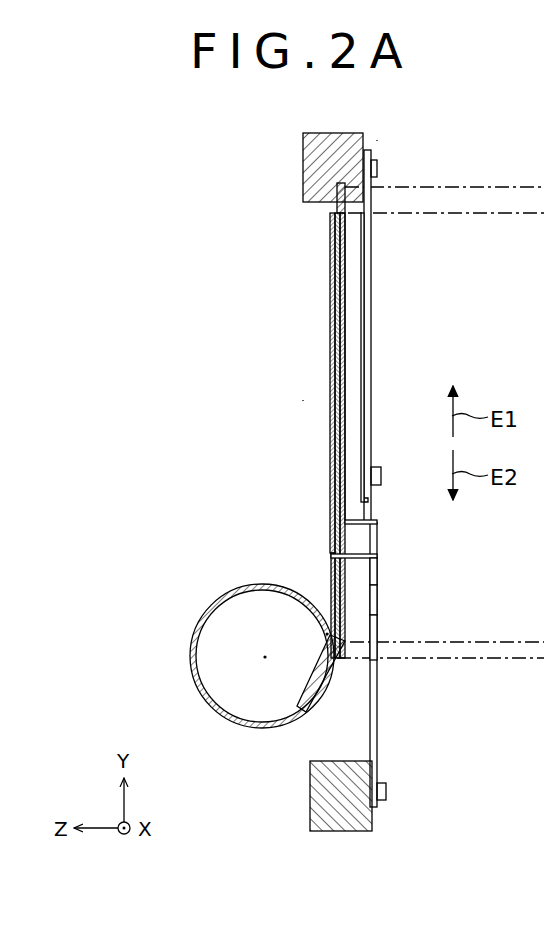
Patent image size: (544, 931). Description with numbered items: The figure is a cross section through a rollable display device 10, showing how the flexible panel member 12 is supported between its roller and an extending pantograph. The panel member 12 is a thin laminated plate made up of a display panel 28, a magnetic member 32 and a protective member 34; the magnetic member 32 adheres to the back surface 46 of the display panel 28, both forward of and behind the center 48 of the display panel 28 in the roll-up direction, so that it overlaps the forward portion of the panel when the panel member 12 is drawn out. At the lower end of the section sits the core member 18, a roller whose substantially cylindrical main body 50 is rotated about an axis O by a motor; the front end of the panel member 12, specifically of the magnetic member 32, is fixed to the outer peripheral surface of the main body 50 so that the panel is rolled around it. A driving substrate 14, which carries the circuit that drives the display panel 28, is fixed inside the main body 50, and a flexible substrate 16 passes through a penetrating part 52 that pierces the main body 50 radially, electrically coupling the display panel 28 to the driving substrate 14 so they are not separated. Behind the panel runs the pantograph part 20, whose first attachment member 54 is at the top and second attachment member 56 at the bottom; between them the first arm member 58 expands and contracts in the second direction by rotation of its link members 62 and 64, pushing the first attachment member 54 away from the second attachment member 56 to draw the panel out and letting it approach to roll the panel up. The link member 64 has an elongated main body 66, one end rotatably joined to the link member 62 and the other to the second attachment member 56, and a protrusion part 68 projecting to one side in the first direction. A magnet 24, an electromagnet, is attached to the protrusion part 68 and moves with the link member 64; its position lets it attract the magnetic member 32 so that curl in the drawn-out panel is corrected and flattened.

The display device 10 is at (215, 215).
The panel member 12 is at (329, 340).
The driving substrate 14 is at (316, 702).
The flexible substrate 16 is at (330, 578).
The core member 18 is at (192, 659).
The pantograph part 20 is at (392, 156).
The magnet 24 is at (376, 545).
The display panel 28 is at (335, 363).
The magnetic member 32 is at (346, 362).
The protective member 34 is at (346, 330).
The back surface 46 is at (346, 429).
The center 48 is at (339, 399).
The main body 50 is at (206, 690).
The penetrating part 52 is at (322, 632).
The first attachment member 54 is at (312, 166).
The second attachment member 56 is at (320, 798).
The first arm member 58 is at (376, 302).
The link member 62 is at (372, 255).
The link member 64 is at (380, 578).
The main body 66 is at (378, 627).
The protrusion part 68 is at (378, 599).
The axis O is at (264, 658).